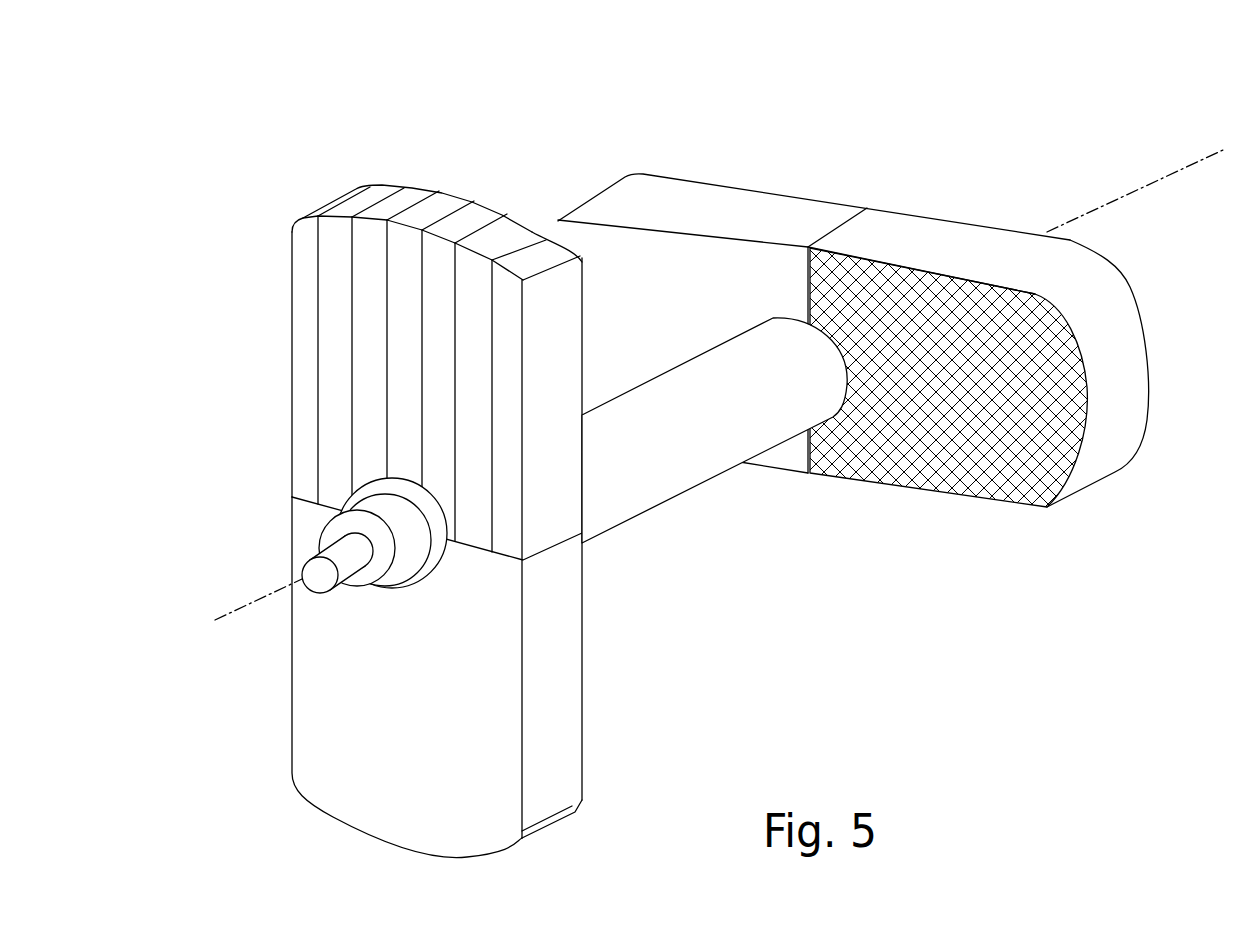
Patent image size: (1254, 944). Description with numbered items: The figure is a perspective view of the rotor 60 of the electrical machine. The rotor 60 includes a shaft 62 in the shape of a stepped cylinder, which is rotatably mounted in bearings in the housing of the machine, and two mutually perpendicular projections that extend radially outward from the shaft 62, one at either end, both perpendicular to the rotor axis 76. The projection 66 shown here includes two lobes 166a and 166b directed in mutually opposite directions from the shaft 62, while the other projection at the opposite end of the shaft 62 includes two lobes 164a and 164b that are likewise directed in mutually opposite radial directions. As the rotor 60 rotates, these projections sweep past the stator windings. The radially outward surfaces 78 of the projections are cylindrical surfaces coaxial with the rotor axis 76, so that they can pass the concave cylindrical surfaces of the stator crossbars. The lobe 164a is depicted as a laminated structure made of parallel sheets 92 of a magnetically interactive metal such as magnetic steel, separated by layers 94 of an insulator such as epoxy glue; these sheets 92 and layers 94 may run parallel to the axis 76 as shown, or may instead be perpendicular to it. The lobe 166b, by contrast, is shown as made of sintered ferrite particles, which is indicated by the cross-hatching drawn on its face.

The rotor 60 is at (670, 477).
The shaft 62 is at (690, 444).
The projection 66 is at (835, 477).
The rotor axis 76 is at (237, 612).
The radially outward surfaces 78 is at (1100, 367).
The parallel sheets 92 is at (317, 284).
The layers of insulator 94 is at (321, 292).
The lobe 164a is at (578, 391).
The lobe 164b is at (445, 721).
The lobe 166a is at (618, 311).
The lobe 166b is at (920, 227).